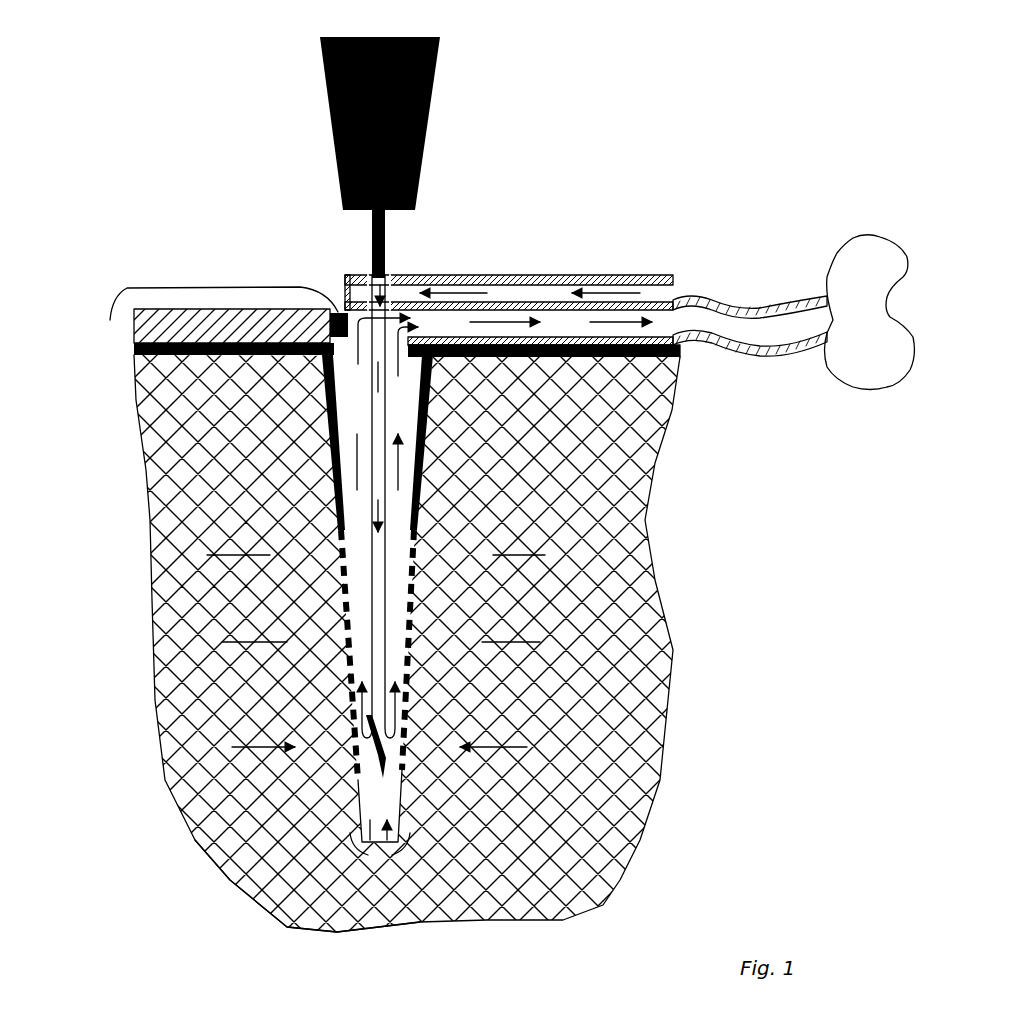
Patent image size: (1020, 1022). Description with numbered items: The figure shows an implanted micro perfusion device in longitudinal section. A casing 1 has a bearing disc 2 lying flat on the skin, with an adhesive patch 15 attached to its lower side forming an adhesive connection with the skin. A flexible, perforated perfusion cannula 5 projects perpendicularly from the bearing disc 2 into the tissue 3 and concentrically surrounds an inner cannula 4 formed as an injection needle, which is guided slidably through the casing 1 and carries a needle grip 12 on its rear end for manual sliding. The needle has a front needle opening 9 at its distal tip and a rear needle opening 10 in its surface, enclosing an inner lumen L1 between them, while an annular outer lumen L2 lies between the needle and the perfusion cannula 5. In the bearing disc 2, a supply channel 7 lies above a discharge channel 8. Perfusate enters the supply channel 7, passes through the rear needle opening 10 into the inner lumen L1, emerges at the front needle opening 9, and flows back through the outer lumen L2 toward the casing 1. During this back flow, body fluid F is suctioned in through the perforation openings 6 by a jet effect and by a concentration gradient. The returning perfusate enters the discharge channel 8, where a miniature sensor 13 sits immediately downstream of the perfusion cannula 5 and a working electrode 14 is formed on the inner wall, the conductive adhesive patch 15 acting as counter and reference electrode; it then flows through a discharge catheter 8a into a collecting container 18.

The casing 1 is at (233, 297).
The bearing disc 2 is at (150, 320).
The tissue 3 is at (610, 453).
The inner cannula 4 is at (367, 667).
The perfusion cannula 5 is at (337, 452).
The perforation openings 6 is at (340, 600).
The supply channel 7 is at (672, 297).
The discharge channel 8 is at (678, 345).
The discharge catheter 8a is at (750, 300).
The front needle opening 9 is at (337, 800).
The rear needle opening 10 is at (392, 290).
The needle grip 12 is at (322, 60).
The miniature sensor 13 is at (338, 315).
The working electrode 14 is at (678, 352).
The adhesive patch 15 is at (134, 343).
The collecting container 18 is at (866, 365).
The inner lumen L1 is at (378, 572).
The outer lumen L2 is at (397, 533).
The body fluid F is at (376, 669).